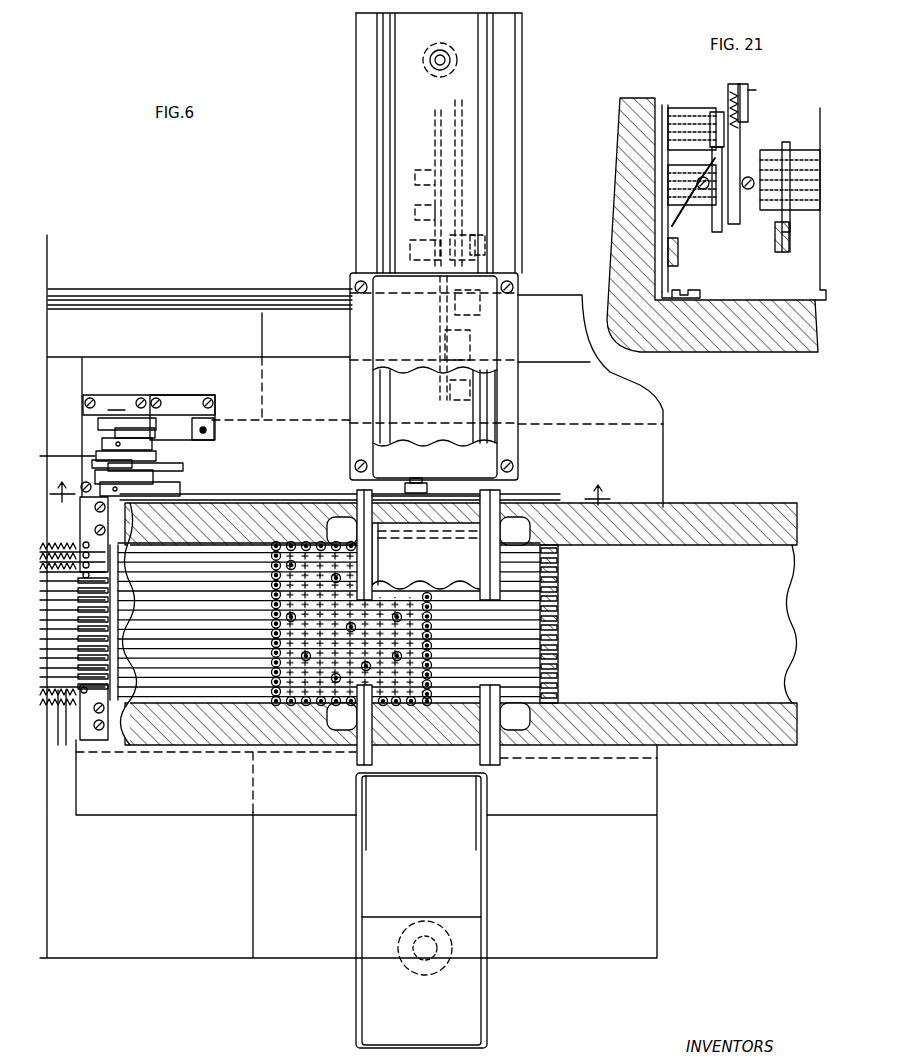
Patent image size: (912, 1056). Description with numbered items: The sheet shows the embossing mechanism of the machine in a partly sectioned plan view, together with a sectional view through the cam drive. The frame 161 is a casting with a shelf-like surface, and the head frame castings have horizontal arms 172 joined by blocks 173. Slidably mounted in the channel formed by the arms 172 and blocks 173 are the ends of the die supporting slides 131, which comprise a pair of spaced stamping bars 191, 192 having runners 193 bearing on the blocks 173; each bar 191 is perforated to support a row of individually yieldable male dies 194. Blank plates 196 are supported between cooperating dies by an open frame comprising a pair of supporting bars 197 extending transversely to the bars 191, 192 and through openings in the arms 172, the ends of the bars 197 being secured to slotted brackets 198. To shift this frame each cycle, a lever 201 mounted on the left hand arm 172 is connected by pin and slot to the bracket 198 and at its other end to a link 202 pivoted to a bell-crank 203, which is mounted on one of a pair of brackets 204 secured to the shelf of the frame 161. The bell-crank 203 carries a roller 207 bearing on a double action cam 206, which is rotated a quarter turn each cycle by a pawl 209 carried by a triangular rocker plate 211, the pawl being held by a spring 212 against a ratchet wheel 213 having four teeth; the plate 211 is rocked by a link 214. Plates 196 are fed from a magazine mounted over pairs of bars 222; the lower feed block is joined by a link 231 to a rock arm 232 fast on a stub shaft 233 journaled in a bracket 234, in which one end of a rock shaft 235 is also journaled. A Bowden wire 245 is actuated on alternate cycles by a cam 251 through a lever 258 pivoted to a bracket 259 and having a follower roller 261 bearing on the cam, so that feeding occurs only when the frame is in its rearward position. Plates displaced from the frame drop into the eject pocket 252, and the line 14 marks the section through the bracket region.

In FIG. 6, the section line 14- 14 is at (336, 493).
In FIG. 6, the die supporting slides 131 is at (74, 644).
In FIG. 6, the frame 161 is at (317, 402).
In FIG. 21, the frame 161 is at (763, 342).
In FIG. 6, the horizontal arms 172 is at (705, 507).
In FIG. 21, the horizontal arms 172 is at (630, 98).
In FIG. 6, the blocks 173 is at (775, 630).
In FIG. 6, the stamping bar 191 is at (207, 660).
In FIG. 6, the stamping bar 192 is at (123, 660).
In FIG. 6, the runners 193 is at (558, 590).
In FIG. 6, the male dies 194 is at (424, 706).
In FIG. 6, the blank plates 196 is at (446, 577).
In FIG. 6, the supporting bars 197 is at (500, 500).
In FIG. 6, the slotted brackets 198 is at (500, 485).
In FIG. 6, the lever 201 is at (428, 493).
In FIG. 6, the link 202 is at (276, 495).
In FIG. 21, the link 202 is at (678, 270).
In FIG. 6, the bell-crank 203 is at (165, 490).
In FIG. 21, the bell-crank 203 is at (676, 238).
In FIG. 6, the brackets 204 is at (80, 500).
In FIG. 21, the brackets 204 is at (665, 105).
In FIG. 21, the double action cam 206 is at (717, 232).
In FIG. 6, the roller 207 is at (150, 477).
In FIG. 21, the roller 207 is at (716, 112).
In FIG. 6, the pawl 209 is at (140, 470).
In FIG. 21, the pawl 209 is at (734, 150).
In FIG. 6, the rocker plate 211 is at (100, 456).
In FIG. 21, the rocker plate 211 is at (748, 90).
In FIG. 21, the spring 212 is at (740, 110).
In FIG. 6, the ratchet wheel 213 is at (137, 446).
In FIG. 21, the ratchet wheel 213 is at (776, 240).
In FIG. 6, the link 214 is at (60, 457).
In FIG. 21, the link 214 is at (748, 96).
In FIG. 6, the bars 222 is at (508, 330).
In FIG. 6, the link 231 is at (440, 145).
In FIG. 6, the rock arm 232 is at (432, 170).
In FIG. 6, the stub shaft 233 is at (486, 249).
In FIG. 6, the bracket 234 is at (438, 324).
In FIG. 6, the rock shaft 235 is at (229, 297).
In FIG. 6, the Bowden wire 245 is at (214, 432).
In FIG. 6, the cam 251 is at (118, 418).
In FIG. 21, the cam 251 is at (790, 145).
In FIG. 6, the eject pocket 252 is at (487, 1035).
In FIG. 6, the lever 258 is at (160, 425).
In FIG. 21, the lever 258 is at (790, 258).
In FIG. 6, the bracket 259 is at (186, 400).
In FIG. 6, the follower roller 261 is at (103, 408).
In FIG. 21, the follower roller 261 is at (778, 258).